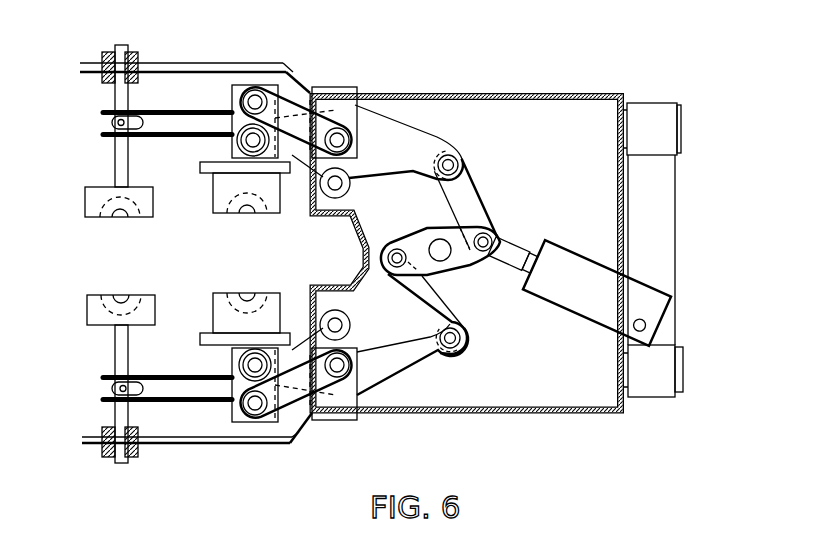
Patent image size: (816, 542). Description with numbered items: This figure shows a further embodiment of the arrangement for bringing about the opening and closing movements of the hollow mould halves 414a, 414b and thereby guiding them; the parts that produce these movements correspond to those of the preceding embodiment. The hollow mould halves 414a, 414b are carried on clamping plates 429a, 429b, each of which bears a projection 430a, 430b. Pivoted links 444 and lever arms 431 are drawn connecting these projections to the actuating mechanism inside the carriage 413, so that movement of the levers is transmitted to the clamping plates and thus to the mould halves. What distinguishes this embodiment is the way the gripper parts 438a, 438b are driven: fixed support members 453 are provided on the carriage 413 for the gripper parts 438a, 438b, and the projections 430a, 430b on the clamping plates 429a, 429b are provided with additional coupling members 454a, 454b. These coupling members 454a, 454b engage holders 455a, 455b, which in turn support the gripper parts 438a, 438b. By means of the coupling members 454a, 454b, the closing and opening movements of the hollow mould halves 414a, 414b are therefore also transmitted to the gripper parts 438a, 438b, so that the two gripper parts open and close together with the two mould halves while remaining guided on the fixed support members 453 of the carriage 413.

The carriage 413 is at (500, 92).
The fixed support members 453 is at (188, 62).
The holder 455b is at (118, 97).
The holder 455a is at (118, 412).
The coupling member 454b is at (188, 117).
The coupling member 454a is at (192, 392).
The gripper part 438b is at (148, 219).
The gripper part 438a is at (147, 296).
The hollow mould half 414b is at (270, 214).
The hollow mould half 414a is at (275, 293).
The clamping plate 429b is at (212, 165).
The clamping plate 429a is at (213, 347).
The projection 430b is at (267, 85).
The projection 430a is at (243, 437).
The link 444 is at (288, 103).
The lever arm 431 is at (392, 130).